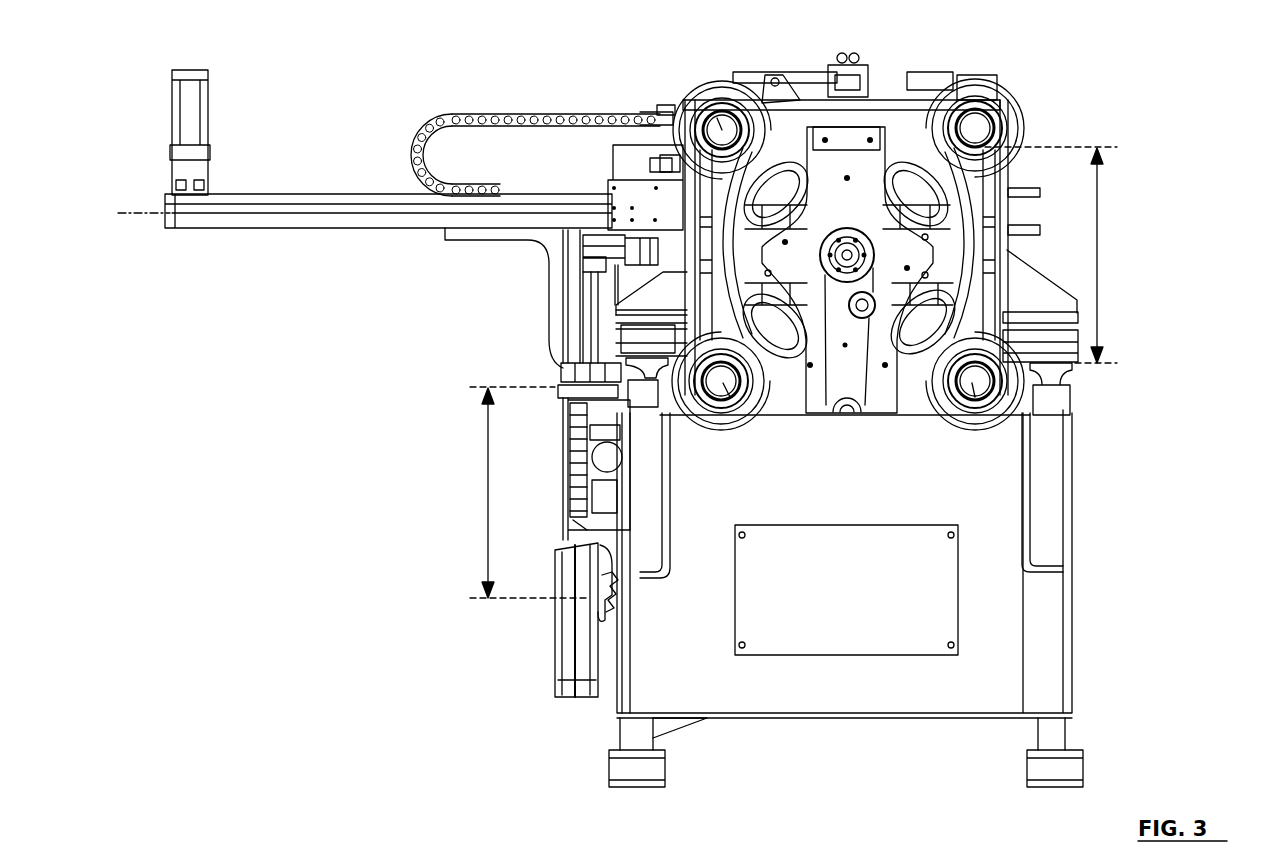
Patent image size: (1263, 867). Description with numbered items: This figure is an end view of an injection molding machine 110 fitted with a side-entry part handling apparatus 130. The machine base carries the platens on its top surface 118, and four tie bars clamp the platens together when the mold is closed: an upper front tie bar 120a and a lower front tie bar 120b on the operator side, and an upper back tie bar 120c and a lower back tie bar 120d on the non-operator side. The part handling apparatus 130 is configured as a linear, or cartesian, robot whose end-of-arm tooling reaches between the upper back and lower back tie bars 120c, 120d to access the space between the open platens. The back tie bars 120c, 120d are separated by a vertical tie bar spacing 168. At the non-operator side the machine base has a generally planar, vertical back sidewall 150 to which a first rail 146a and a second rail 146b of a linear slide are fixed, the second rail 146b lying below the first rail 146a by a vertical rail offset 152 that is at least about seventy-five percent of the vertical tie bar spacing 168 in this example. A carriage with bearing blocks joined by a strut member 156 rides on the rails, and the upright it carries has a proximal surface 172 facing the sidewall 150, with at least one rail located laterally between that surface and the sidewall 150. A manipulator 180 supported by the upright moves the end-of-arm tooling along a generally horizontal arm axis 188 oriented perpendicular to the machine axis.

The injection molding machine 110 is at (1096, 102).
The top surface 118 is at (1050, 380).
The upper front tie bar 120a is at (997, 123).
The lower front tie bar 120b is at (945, 415).
The upper back tie bar 120c is at (683, 93).
The lower back tie bar 120d is at (763, 417).
The part handling apparatus 130 is at (358, 116).
The first rail 146a is at (573, 385).
The second rail 146b is at (600, 620).
The sidewall 150 is at (620, 540).
The vertical rail offset 152 is at (483, 522).
The strut member 156 is at (623, 577).
The vertical tie bar spacing 168 is at (1097, 240).
The proximal surface 172 is at (623, 593).
The manipulator 180 is at (337, 212).
The arm axis 188 is at (133, 214).